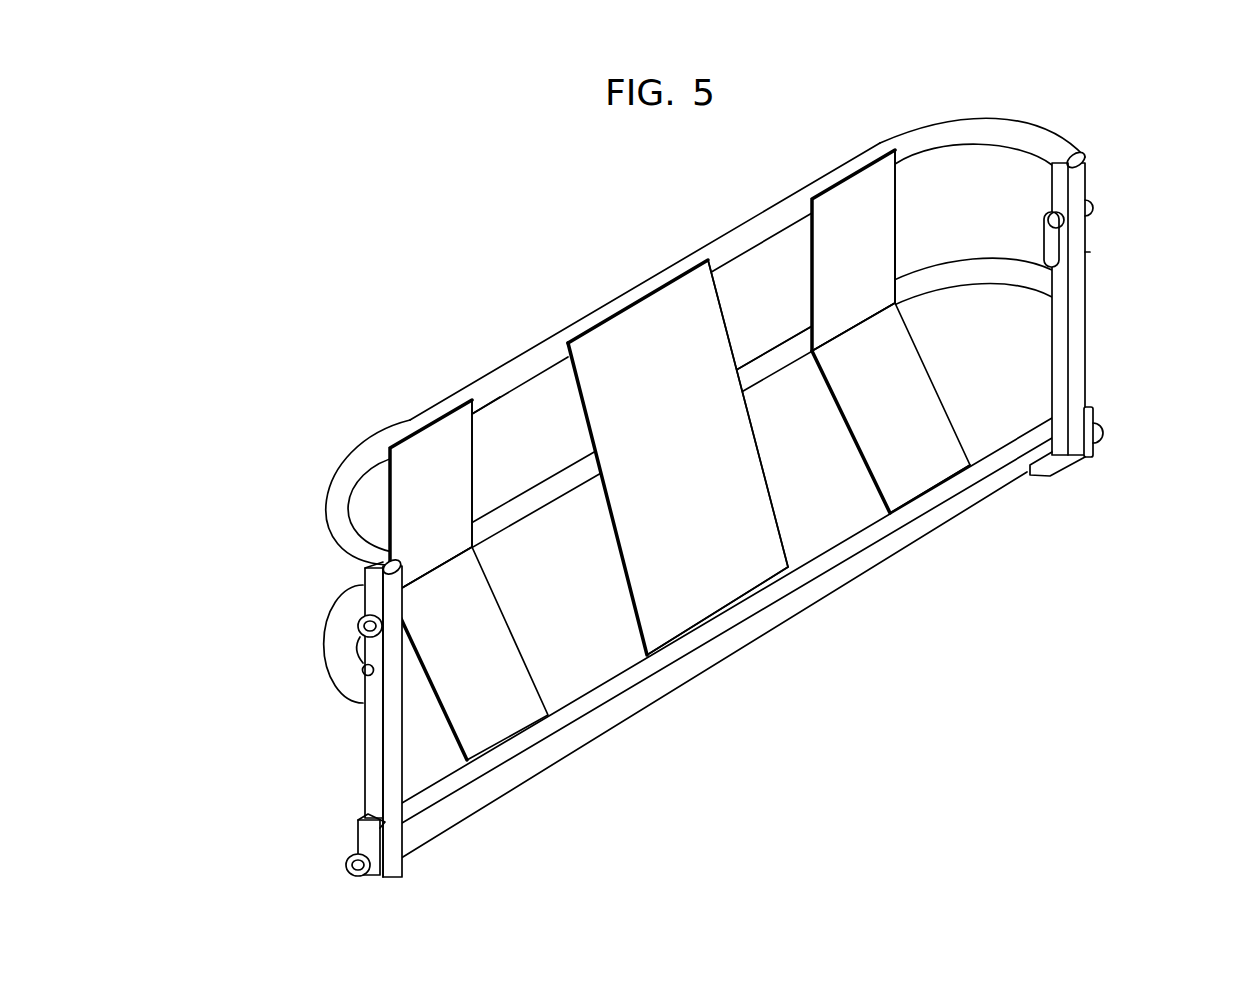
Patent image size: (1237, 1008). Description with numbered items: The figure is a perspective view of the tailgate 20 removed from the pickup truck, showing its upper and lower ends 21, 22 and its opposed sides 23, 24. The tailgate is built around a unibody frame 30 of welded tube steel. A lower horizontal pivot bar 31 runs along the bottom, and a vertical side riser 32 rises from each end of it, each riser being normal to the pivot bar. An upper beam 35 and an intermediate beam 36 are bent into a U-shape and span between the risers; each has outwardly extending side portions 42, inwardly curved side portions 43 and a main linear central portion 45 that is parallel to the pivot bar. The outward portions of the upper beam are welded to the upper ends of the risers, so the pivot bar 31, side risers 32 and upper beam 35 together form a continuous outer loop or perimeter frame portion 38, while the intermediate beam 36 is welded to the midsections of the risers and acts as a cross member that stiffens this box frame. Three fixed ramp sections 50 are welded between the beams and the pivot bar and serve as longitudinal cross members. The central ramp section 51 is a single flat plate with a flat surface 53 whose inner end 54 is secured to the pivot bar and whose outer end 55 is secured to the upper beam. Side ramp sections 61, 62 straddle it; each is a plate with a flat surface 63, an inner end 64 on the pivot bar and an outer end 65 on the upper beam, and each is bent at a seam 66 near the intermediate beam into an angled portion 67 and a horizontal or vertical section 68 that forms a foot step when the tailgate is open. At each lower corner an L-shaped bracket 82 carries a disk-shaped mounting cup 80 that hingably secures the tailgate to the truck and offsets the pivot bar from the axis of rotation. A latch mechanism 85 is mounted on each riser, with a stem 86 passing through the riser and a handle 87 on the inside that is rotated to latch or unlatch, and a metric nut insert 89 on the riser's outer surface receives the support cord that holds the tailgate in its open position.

The tailgate 20 is at (715, 478).
The upper end 21 is at (540, 343).
The lower end 22 is at (622, 715).
The side 23 is at (1087, 262).
The side 24 is at (365, 727).
The unibody frame 30 is at (975, 120).
The pivot bar 31 is at (730, 645).
The side riser 32 is at (1080, 317).
The upper beam 35 is at (778, 222).
The intermediate beam 36 is at (757, 353).
The perimeter frame portion 38 is at (1042, 127).
The outwardly extending side portion 42 is at (338, 553).
The inwardly curved side portion 43 is at (338, 458).
The main linear central portion 45 is at (487, 382).
The fixed ramp section 50 is at (610, 332).
The central ramp section 51 is at (645, 313).
The flat surface 53 is at (678, 457).
The inner end 54 is at (782, 563).
The outer end 55 is at (707, 286).
The side ramp section 61 is at (866, 187).
The side ramp section 62 is at (435, 448).
The flat surface 63 is at (649, 407).
The inner end 64 is at (957, 458).
The outer end 65 is at (886, 168).
The seam 66 is at (485, 577).
The angled portion 67 is at (515, 667).
The horizontal or vertical section 68 is at (463, 477).
The mounting cup 80 is at (347, 858).
The L-shaped bracket 82 is at (410, 848).
The latch mechanism 85 is at (357, 620).
The stem 86 is at (1091, 213).
The handle 87 is at (1043, 245).
The metric nut insert 89 is at (355, 690).